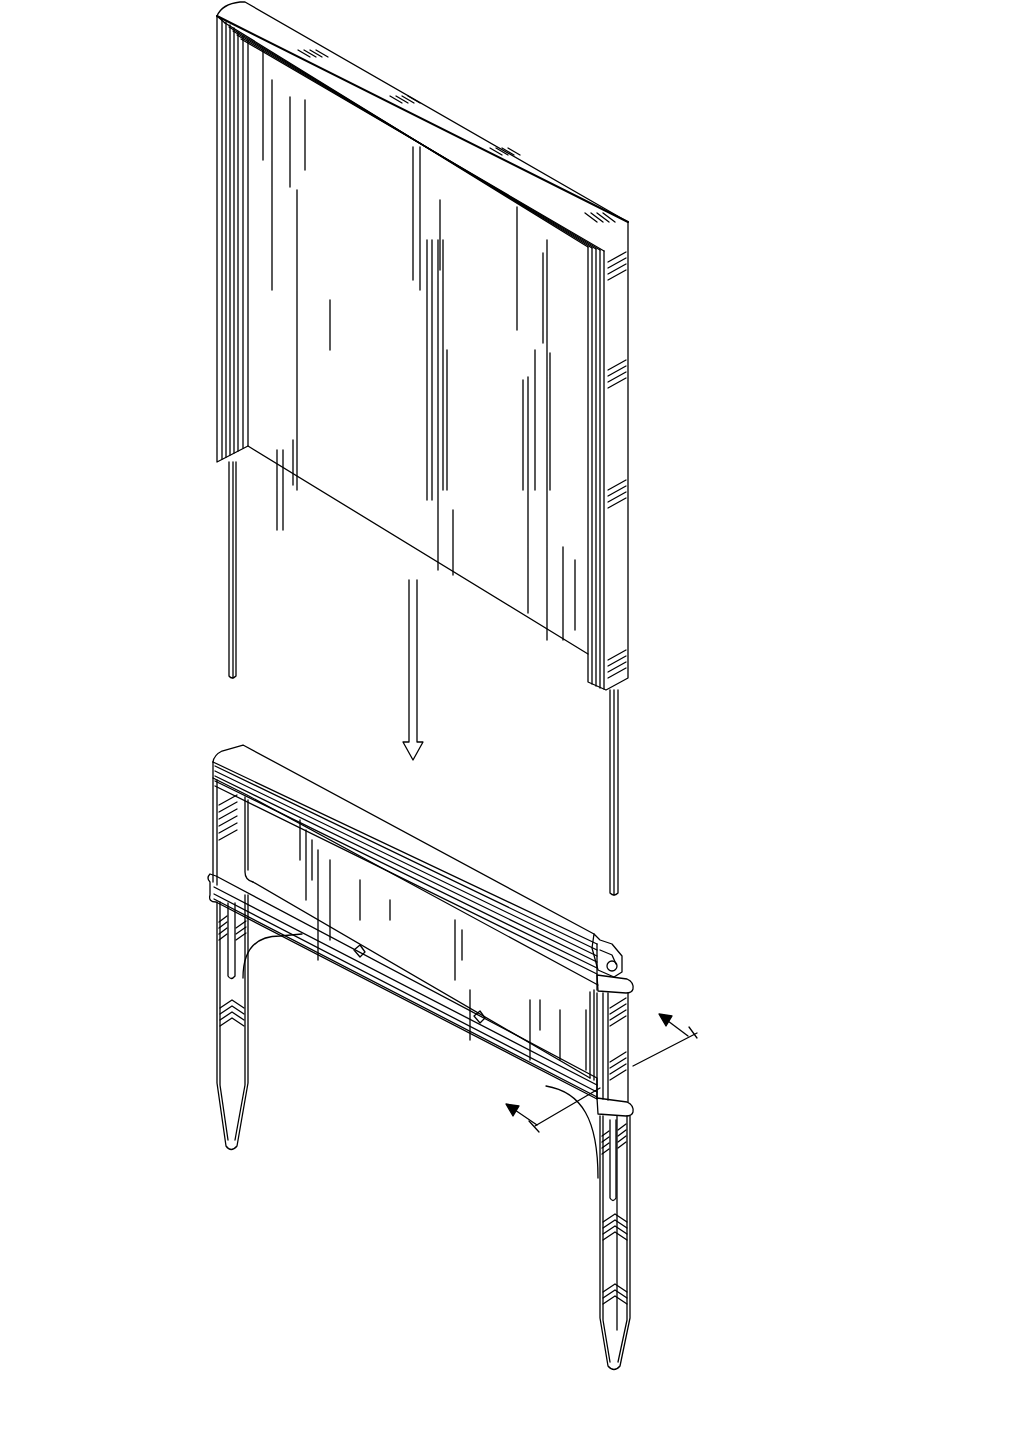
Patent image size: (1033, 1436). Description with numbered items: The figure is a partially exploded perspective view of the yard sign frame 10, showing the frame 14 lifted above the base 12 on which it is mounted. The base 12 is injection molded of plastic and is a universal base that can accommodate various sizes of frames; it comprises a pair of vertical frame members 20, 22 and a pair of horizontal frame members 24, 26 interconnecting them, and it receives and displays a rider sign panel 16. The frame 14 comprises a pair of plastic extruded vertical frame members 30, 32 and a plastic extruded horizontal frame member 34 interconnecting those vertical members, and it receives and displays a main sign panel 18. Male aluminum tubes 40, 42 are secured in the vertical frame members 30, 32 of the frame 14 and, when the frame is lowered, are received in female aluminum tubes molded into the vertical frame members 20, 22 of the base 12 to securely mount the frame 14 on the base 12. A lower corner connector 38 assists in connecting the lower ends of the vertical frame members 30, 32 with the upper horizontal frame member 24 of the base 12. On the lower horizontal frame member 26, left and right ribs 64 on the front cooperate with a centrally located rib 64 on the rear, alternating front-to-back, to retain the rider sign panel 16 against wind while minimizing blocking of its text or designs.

The yard sign frame 10 is at (454, 691).
The base 12 is at (419, 1057).
The frame 14 is at (424, 448).
The rider sign panel 16 is at (425, 945).
The main sign panel 18 is at (418, 352).
The vertical frame member 20 is at (639, 1243).
The vertical frame member 22 is at (204, 1022).
The horizontal frame member 24 is at (423, 869).
The horizontal frame member 26 is at (420, 995).
The vertical frame member 30 is at (633, 456).
The vertical frame member 32 is at (204, 239).
The horizontal frame member 34 is at (422, 126).
The lower corner connector 38 is at (635, 952).
The male aluminum tube 40 is at (639, 792).
The male aluminum tube 42 is at (259, 570).
The rib 64 is at (420, 1055).